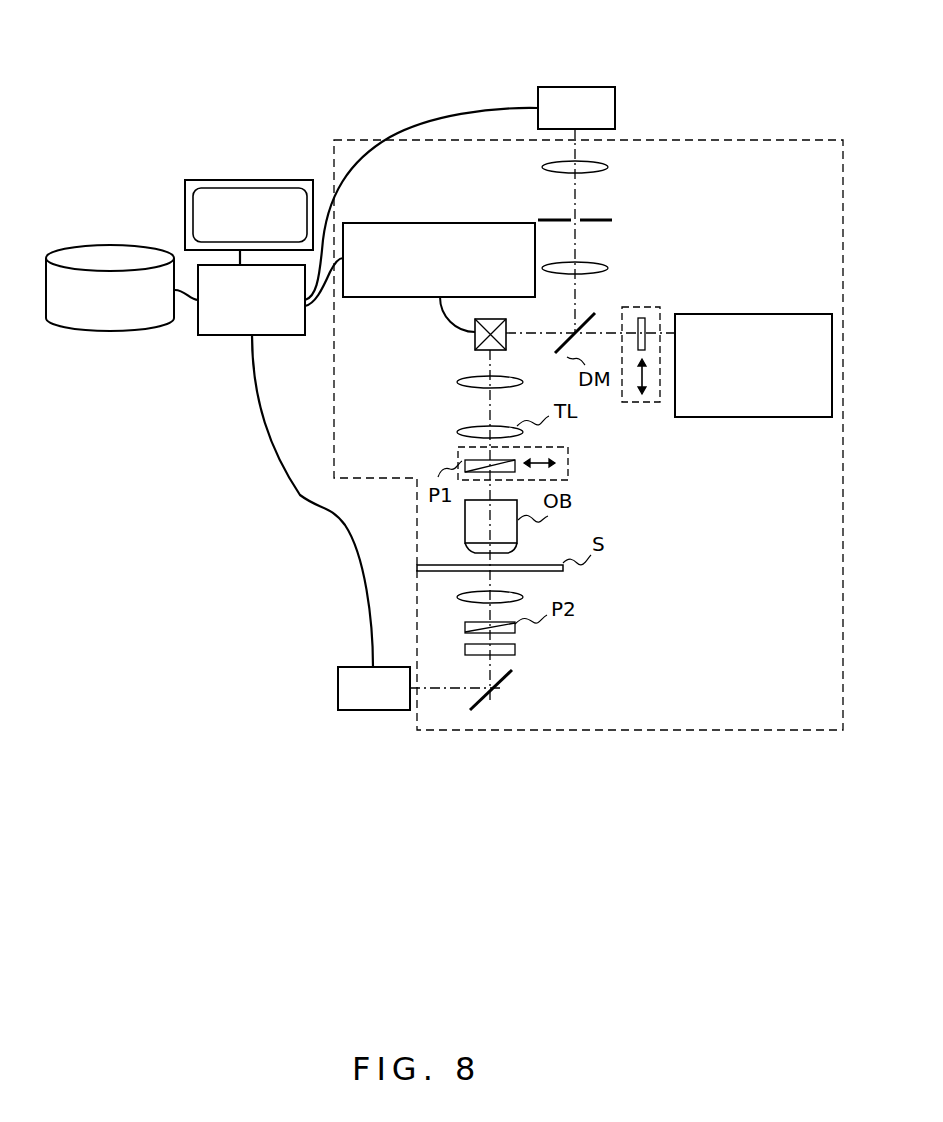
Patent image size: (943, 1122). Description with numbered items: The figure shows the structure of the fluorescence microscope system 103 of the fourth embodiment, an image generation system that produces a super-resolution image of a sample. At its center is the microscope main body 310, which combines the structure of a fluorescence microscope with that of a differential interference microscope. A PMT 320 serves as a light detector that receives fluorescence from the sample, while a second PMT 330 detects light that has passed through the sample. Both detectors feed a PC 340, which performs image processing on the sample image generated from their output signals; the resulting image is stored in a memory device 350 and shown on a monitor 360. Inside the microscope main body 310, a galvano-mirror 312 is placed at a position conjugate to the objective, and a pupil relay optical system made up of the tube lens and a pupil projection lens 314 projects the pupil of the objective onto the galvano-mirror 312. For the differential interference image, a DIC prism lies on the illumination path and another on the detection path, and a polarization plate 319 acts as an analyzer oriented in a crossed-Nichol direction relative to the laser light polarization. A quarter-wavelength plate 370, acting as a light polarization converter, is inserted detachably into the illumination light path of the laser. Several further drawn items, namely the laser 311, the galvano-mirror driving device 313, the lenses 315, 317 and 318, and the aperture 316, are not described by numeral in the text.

The fluorescence microscope system 103 is at (756, 40).
The microscope main body 310 is at (700, 140).
The ultrashort pulse laser 311 is at (762, 314).
The galvano-mirror 312 is at (503, 319).
The galvano-mirror driving device 313 is at (448, 223).
The pupil projection lens 314 is at (462, 378).
The lens 315 is at (607, 267).
The aperture (pinhole) 316 is at (612, 220).
The lens 317 is at (608, 167).
The lens 318 is at (472, 602).
The polarization plate 319 is at (515, 648).
The PMT 320 is at (557, 87).
The PMT 330 is at (338, 687).
The PC 340 is at (220, 337).
The memory device 350 is at (90, 243).
The monitor 360 is at (220, 178).
The ¼-wavelength plate 370 is at (636, 316).